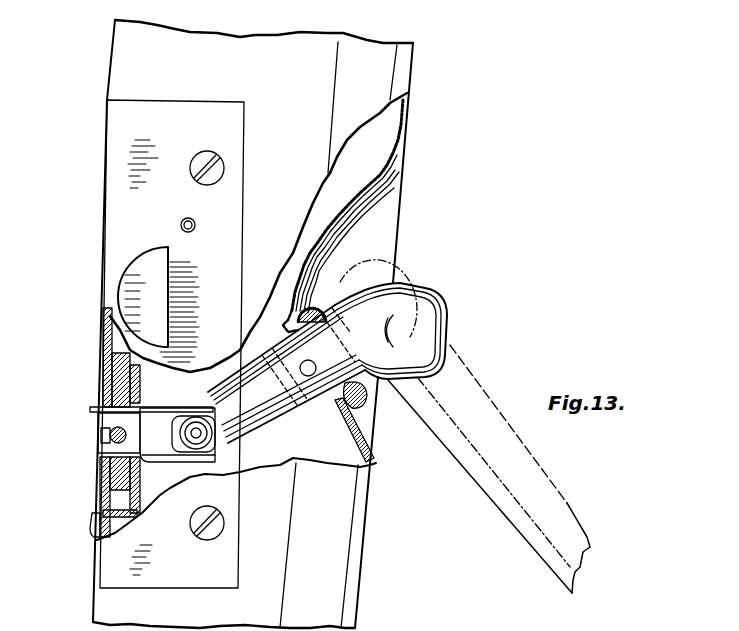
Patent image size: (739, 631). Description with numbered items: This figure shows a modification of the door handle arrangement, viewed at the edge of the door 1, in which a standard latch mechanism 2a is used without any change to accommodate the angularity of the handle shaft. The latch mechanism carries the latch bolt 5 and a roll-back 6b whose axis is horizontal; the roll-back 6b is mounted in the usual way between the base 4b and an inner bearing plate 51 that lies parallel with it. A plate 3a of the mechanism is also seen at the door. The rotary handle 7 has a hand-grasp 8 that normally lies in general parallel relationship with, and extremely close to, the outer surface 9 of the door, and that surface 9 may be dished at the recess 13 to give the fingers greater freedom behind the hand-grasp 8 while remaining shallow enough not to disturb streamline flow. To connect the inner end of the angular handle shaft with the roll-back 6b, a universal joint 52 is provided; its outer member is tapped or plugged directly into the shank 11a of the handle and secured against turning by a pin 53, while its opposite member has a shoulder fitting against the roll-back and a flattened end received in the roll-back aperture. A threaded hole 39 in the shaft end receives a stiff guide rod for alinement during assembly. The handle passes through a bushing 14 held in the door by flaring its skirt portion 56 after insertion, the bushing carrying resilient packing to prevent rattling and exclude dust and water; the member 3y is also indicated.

The door 1 is at (221, 47).
The latch mechanism 2a is at (100, 214).
The mounting plate 3a is at (190, 112).
The latch bolt 5 is at (133, 281).
The recess 13 is at (330, 218).
The outer surface of the door 9 is at (398, 212).
The rotary handle 7 is at (406, 279).
The hand-grasp 8 is at (448, 305).
The skirt portion 56 is at (295, 322).
The universal joint 52 is at (201, 406).
The pin 53 is at (306, 402).
The shank of the handle 11a is at (318, 405).
The bushing 14 is at (367, 410).
The roll-back 6b is at (97, 405).
The bearing 3y is at (97, 430).
The threaded hole 39 is at (112, 438).
The base 4b is at (103, 494).
The inner bearing plate 51 is at (140, 495).